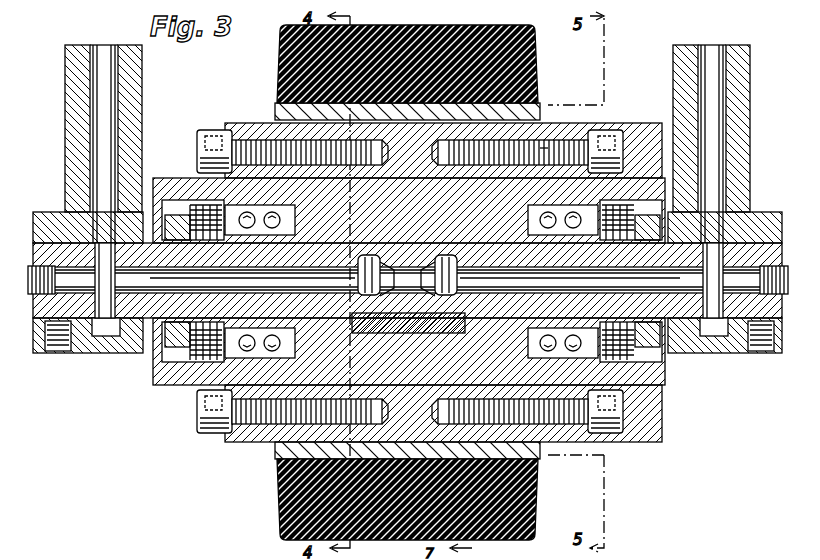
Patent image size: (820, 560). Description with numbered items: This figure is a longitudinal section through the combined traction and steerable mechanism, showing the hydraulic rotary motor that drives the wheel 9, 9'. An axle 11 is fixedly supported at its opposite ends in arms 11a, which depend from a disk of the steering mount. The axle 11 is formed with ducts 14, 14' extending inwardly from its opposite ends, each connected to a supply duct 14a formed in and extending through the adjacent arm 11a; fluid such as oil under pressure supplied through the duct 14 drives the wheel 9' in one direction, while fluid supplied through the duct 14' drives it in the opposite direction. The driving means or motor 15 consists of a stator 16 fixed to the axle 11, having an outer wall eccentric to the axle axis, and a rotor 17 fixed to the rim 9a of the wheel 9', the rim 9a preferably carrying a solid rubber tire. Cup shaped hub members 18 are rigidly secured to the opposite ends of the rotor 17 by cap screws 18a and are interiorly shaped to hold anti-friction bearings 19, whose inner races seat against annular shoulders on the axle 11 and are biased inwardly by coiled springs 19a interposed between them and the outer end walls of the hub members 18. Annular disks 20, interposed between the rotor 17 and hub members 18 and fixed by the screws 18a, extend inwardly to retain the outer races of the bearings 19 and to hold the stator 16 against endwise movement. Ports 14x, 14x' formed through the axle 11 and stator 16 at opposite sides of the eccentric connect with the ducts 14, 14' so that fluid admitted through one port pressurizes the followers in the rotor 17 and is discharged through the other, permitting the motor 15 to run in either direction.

The wheel 9 is at (409, 266).
The wheel 9' is at (421, 282).
The rim 9a is at (544, 113).
The axle 11 is at (36, 325).
The arms 11a is at (65, 108).
The duct 14 is at (407, 313).
The duct 14' is at (755, 320).
The supply duct 14a is at (92, 125).
The port 14x is at (407, 273).
The port 14x' is at (424, 313).
The driving means or motor 15 is at (425, 450).
The stator 16 is at (498, 268).
The rotor 17 is at (344, 266).
The hub members 18 is at (240, 125).
The cap screws 18a is at (610, 132).
The anti-friction bearings 19 is at (270, 243).
The coiled spring 19a is at (180, 380).
The annular disks 20 is at (540, 158).